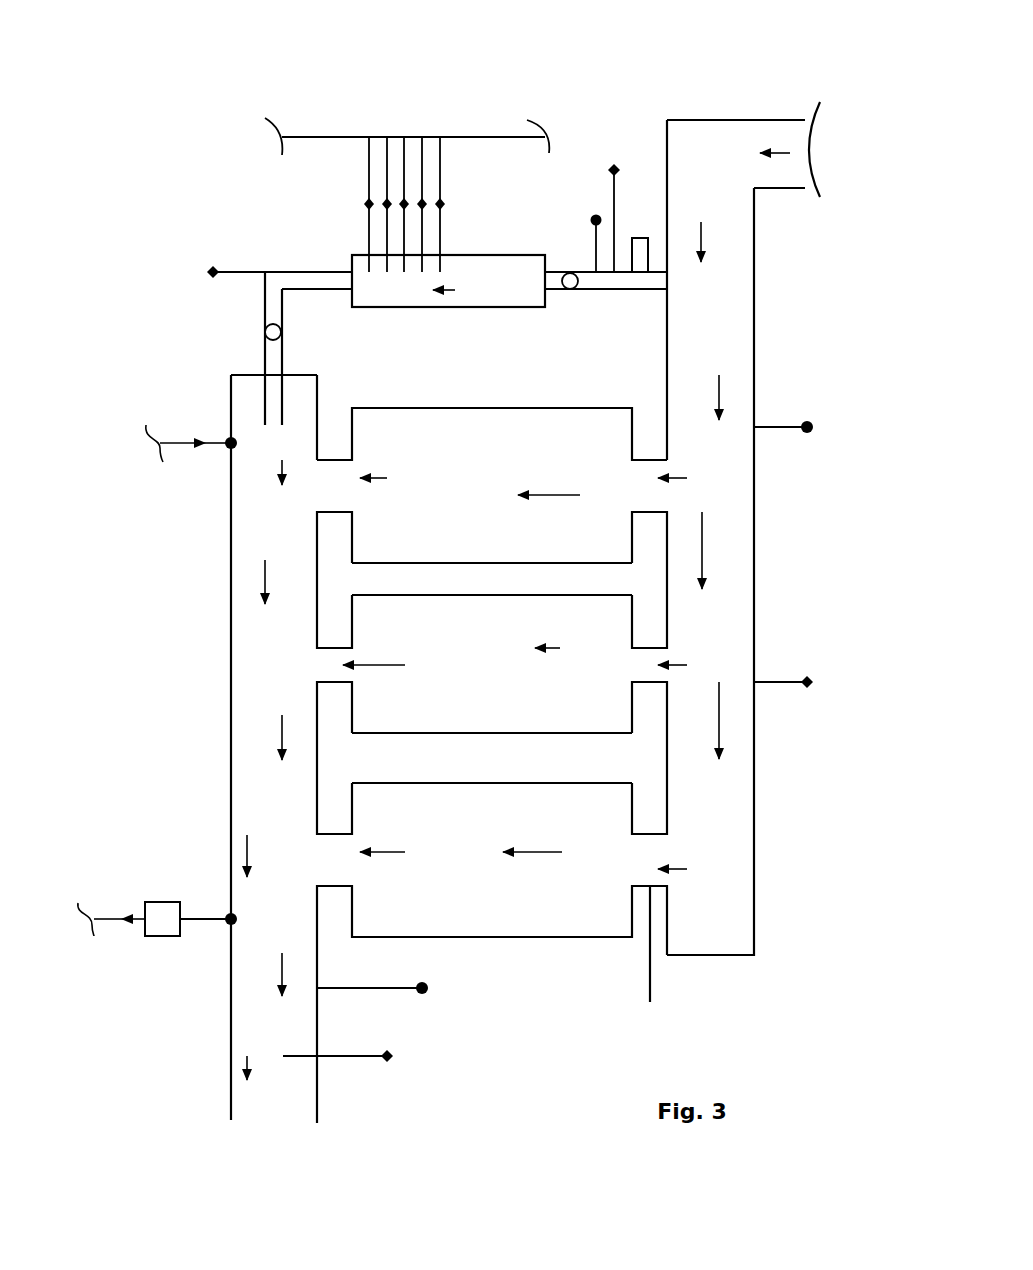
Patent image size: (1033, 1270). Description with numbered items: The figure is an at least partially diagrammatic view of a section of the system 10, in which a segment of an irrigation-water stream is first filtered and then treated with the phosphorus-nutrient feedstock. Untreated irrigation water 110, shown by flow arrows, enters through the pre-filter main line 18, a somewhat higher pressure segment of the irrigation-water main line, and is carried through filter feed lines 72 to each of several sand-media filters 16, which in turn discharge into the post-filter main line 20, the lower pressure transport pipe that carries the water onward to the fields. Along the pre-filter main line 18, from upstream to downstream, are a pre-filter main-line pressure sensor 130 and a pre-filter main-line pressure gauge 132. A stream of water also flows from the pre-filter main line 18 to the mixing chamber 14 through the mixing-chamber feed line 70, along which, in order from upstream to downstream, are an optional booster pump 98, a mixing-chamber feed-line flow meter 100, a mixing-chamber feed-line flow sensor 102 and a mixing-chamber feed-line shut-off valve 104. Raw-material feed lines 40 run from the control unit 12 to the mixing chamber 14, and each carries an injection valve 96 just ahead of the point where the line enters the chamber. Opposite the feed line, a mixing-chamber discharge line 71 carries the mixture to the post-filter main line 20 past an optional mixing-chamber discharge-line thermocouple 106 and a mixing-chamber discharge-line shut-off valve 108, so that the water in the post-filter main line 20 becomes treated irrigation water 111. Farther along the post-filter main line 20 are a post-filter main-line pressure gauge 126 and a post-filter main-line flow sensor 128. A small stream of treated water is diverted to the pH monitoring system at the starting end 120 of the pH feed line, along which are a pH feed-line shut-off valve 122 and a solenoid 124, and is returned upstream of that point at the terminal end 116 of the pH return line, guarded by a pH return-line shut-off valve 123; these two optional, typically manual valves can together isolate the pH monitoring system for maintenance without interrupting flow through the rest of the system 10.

The system 10 is at (190, 128).
The control unit 12 is at (527, 137).
The mixing chamber 14 is at (498, 286).
The sand-media filters 16 is at (435, 459).
The pre-filter main line 18 is at (757, 612).
The post-filter main line 20 is at (231, 647).
The raw-material feed lines 40 is at (404, 153).
The mixing-chamber feed line 70 is at (650, 290).
The mixing-chamber discharge line 71 is at (283, 292).
The filter feed lines 72 is at (650, 494).
The injection valve 96 is at (369, 204).
The booster pump 98 is at (634, 240).
The mixing-chamber feed-line flow meter 100 is at (614, 190).
The mixing-chamber feed-line flow sensor 102 is at (594, 222).
The mixing-chamber feed-line shut-off valve 104 is at (572, 291).
The mixing-chamber discharge-line thermocouple 106 is at (213, 273).
The mixing-chamber discharge-line shut-off valve 108 is at (266, 333).
The untreated irrigation water 110 is at (703, 560).
The treated irrigation water 111 is at (247, 850).
The terminal end of the pH return line 116 is at (228, 443).
The starting end of the pH feed line 120 is at (128, 924).
The pH feed-line shut-off valve 122 is at (229, 926).
The pH return-line shut-off valve 123 is at (230, 448).
The solenoid 124 is at (163, 900).
The post-filter main-line pressure gauge 126 is at (390, 988).
The post-filter main-line flow sensor 128 is at (337, 1056).
The pre-filter main-line pressure sensor 130 is at (771, 427).
The pre-filter main-line pressure gauge 132 is at (773, 682).